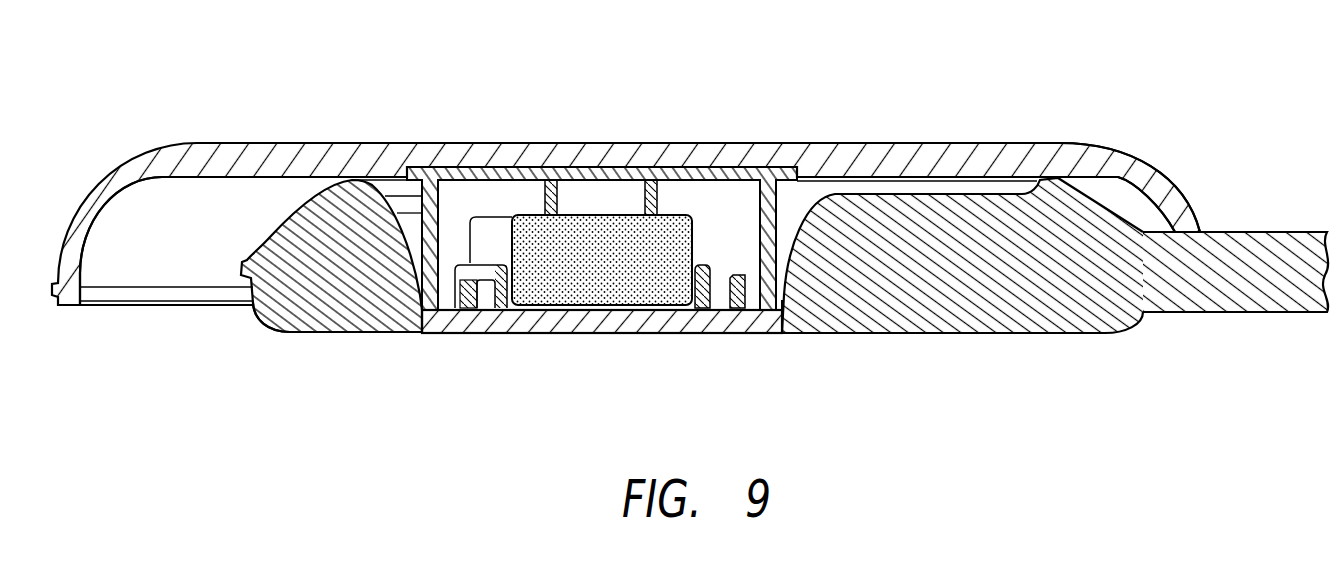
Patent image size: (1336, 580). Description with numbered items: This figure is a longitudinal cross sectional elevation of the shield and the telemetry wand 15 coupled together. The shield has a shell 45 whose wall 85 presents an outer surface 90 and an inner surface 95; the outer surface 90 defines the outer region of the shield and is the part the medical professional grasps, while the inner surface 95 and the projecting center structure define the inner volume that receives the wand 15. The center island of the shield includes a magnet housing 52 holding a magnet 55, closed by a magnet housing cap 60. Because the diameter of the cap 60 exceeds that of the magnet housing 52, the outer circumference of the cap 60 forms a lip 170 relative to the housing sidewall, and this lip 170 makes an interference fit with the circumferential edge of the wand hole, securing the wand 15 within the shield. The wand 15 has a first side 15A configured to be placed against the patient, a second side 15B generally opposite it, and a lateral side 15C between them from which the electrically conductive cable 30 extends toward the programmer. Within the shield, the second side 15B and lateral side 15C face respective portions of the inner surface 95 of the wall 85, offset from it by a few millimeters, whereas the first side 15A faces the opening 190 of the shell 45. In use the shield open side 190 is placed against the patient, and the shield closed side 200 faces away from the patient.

The shield closed side 200 is at (690, 227).
The shell 45 is at (626, 180).
The wall 85 is at (347, 148).
The outer surface 90 is at (1068, 143).
The inner surface 95 is at (136, 267).
The telemetry wand 15 is at (689, 303).
The first side 15A is at (983, 323).
The second side 15B is at (976, 180).
The lateral side 15C is at (243, 262).
The opening 190 is at (236, 323).
The lip 170 is at (786, 298).
The magnet housing 52 is at (783, 298).
The magnet housing cap 60 is at (638, 317).
The magnet 55 is at (625, 276).
The cable 30 is at (1277, 232).